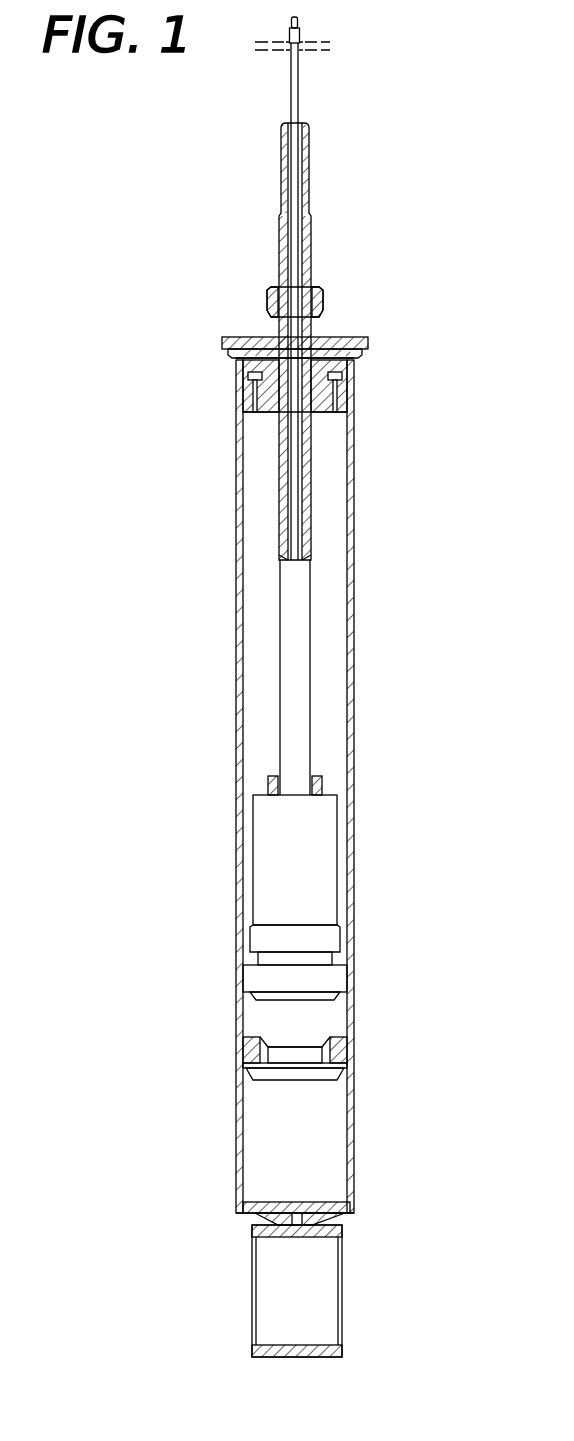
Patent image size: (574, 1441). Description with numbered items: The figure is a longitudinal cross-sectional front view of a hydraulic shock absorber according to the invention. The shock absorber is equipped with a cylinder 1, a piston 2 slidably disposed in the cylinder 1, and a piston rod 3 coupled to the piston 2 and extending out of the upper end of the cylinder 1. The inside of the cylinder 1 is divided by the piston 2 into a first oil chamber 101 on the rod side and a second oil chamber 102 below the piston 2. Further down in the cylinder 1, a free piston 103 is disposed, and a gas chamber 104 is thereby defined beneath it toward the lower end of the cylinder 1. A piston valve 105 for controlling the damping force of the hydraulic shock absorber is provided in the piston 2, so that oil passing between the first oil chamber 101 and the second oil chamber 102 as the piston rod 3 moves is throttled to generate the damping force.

The cylinder 1 is at (355, 622).
The piston 2 is at (335, 977).
The piston rod 3 is at (283, 440).
The first oil chamber 101 is at (265, 581).
The second oil chamber 102 is at (335, 1022).
The free piston 103 is at (350, 1050).
The gas chamber 104 is at (262, 1125).
The piston valve 105 is at (312, 903).